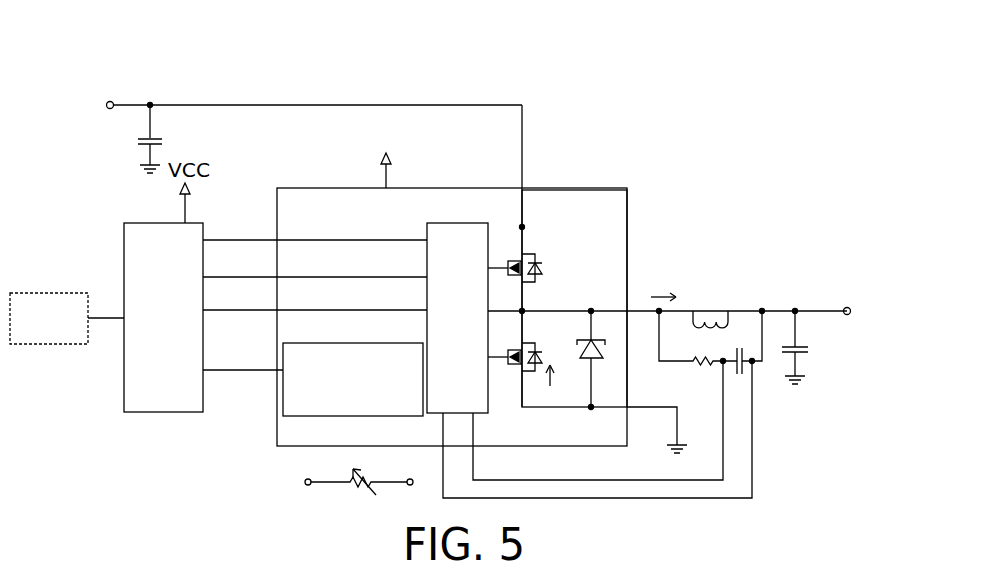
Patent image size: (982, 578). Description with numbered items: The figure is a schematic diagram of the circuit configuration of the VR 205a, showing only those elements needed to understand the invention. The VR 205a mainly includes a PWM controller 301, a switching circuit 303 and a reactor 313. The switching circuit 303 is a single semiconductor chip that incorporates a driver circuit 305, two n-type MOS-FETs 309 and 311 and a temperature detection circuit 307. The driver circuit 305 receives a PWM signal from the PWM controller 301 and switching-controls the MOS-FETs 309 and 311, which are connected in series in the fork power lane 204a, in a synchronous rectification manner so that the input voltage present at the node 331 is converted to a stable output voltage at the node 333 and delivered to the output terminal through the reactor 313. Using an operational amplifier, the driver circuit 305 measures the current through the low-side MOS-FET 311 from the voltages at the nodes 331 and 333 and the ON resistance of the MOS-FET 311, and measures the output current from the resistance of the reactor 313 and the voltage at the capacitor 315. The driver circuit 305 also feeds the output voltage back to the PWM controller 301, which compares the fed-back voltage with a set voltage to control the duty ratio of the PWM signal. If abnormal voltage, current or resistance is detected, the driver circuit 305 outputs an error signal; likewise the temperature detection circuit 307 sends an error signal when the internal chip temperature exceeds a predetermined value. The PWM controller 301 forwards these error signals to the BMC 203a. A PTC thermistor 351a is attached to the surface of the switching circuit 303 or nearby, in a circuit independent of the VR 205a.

The BMC 203a is at (100, 276).
The fork power lane 204a is at (285, 105).
The VR 205a is at (652, 95).
The PWM controller 301 is at (203, 223).
The switching circuit 303 is at (640, 180).
The driver circuit 305 is at (497, 214).
The temperature detection circuit 307 is at (388, 343).
The MOS-FET 309 is at (536, 256).
The MOS-FET 311 is at (553, 337).
The reactor 313 is at (707, 320).
The capacitor 315 is at (737, 350).
The node 331 is at (545, 212).
The node 333 is at (524, 311).
The PTC thermistor 351a is at (361, 471).